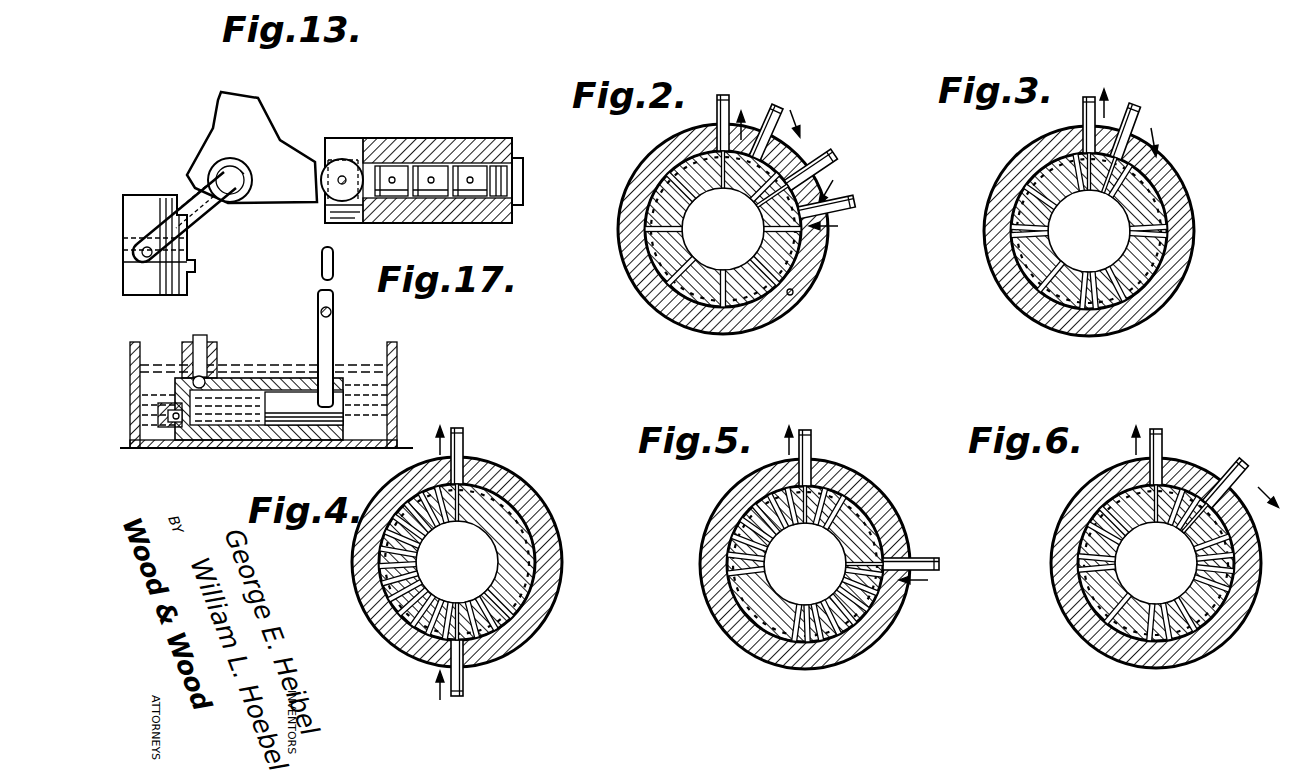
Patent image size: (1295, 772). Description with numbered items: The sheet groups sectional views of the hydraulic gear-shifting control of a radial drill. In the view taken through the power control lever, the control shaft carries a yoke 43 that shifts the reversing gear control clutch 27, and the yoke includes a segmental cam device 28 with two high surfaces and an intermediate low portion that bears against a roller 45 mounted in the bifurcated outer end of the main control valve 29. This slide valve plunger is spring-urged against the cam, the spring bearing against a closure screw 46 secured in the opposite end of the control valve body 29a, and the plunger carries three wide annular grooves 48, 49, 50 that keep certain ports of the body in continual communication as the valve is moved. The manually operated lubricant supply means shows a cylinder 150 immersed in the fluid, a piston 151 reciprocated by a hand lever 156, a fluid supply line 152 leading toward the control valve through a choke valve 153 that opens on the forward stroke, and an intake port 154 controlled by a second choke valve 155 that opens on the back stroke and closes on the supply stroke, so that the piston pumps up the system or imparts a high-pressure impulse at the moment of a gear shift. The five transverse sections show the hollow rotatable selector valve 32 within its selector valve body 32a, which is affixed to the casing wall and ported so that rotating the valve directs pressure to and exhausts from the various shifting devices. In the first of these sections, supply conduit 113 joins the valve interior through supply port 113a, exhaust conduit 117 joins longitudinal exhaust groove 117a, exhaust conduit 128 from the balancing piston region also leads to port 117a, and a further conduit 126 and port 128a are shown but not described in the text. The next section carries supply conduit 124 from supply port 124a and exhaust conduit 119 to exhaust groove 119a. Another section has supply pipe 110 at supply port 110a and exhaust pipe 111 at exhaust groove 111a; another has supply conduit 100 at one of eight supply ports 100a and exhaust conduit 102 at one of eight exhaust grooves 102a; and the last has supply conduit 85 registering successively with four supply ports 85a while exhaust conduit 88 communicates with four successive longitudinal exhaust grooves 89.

In FIG. 13, the cam device 28 is at (280, 148).
In FIG. 13, the yoke 43 is at (242, 200).
In FIG. 13, the reversing gear control clutch 27 is at (185, 290).
In FIG. 13, the main control valve 29 is at (438, 218).
In FIG. 13, the control valve body 29a is at (505, 222).
In FIG. 13, the roller 45 is at (340, 176).
In FIG. 13, the annular groove 48 is at (393, 168).
In FIG. 13, the annular groove 49 is at (440, 168).
In FIG. 13, the annular groove 50 is at (470, 168).
In FIG. 13, the closure screw 46 is at (523, 184).
In FIG. 17, the intake port 154 is at (165, 448).
In FIG. 17, the cylinder 150 is at (250, 430).
In FIG. 17, the piston 151 is at (318, 430).
In FIG. 17, the fluid supply line 152 is at (207, 346).
In FIG. 17, the choke valve 153 is at (212, 372).
In FIG. 17, the choke valve 155 is at (180, 425).
In FIG. 17, the lever 156 is at (333, 340).
In FIG. 2, the selector valve 32 is at (745, 320).
In FIG. 3, the selector valve 32 is at (1014, 262).
In FIG. 4, the selector valve 32 is at (532, 578).
In FIG. 5, the selector valve 32 is at (744, 572).
In FIG. 6, the selector valve 32 is at (1082, 550).
In FIG. 2, the selector valve body 32a is at (638, 258).
In FIG. 3, the selector valve body 32a is at (1032, 310).
In FIG. 4, the selector valve body 32a is at (552, 546).
In FIG. 5, the selector valve body 32a is at (730, 636).
In FIG. 6, the selector valve body 32a is at (1070, 608).
In FIG. 2, the supply conduit 113 is at (717, 122).
In FIG. 2, the supply port 113a is at (724, 190).
In FIG. 2, the exhaust conduit 128 is at (770, 108).
In FIG. 2, the port 128a is at (800, 272).
In FIG. 2, the exhaust conduit 117 is at (815, 166).
In FIG. 2, the longitudinal exhaust groove 117a is at (768, 163).
In FIG. 2, the outlet pipe 126 is at (836, 204).
In FIG. 3, the supply conduit 124 is at (1093, 95).
In FIG. 3, the supply port 124a is at (1086, 188).
In FIG. 3, the exhaust conduit 119 is at (1143, 110).
In FIG. 3, the exhaust groove 119a is at (1128, 162).
In FIG. 4, the supply pipe 110 is at (463, 445).
In FIG. 4, the supply port 110a is at (470, 492).
In FIG. 4, the exhaust pipe 111 is at (468, 684).
In FIG. 4, the exhaust groove 111a is at (515, 646).
In FIG. 5, the supply conduit 100 is at (816, 440).
In FIG. 5, the supply port 100a is at (813, 488).
In FIG. 5, the exhaust conduit 102 is at (916, 558).
In FIG. 5, the exhaust groove 102a is at (886, 540).
In FIG. 6, the supply conduit 85 is at (1158, 455).
In FIG. 6, the supply ports 85a is at (1159, 486).
In FIG. 6, the exhaust conduit 88 is at (1240, 472).
In FIG. 6, the exhaust groove 89 is at (1200, 500).